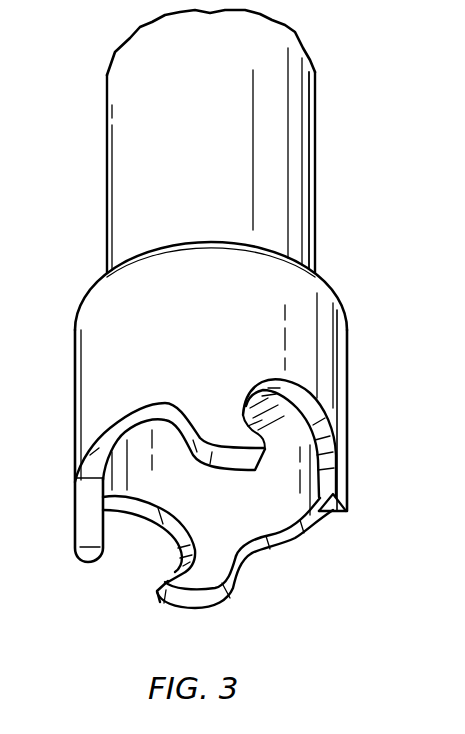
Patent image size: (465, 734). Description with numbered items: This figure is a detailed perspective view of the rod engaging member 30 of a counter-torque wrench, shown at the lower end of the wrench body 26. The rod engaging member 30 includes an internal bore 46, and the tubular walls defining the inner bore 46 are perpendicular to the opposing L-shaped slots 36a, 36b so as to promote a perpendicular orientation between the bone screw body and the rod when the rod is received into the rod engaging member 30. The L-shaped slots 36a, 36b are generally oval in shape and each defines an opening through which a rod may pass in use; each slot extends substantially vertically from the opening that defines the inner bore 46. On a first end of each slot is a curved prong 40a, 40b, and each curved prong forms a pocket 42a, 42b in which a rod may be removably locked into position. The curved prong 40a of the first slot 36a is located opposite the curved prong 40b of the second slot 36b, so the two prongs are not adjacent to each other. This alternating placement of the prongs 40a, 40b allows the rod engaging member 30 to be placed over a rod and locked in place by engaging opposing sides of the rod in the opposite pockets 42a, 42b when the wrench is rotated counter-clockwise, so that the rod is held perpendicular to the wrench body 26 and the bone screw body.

The wrench body 26 is at (317, 135).
The rod engaging member 30 is at (79, 368).
The first L-shaped slot 36a is at (242, 416).
The second L-shaped slot 36b is at (211, 574).
The first curved prong 40a is at (245, 458).
The second curved prong 40b is at (179, 598).
The first pocket 42a is at (256, 400).
The second pocket 42b is at (178, 553).
The internal bore 46 is at (278, 497).